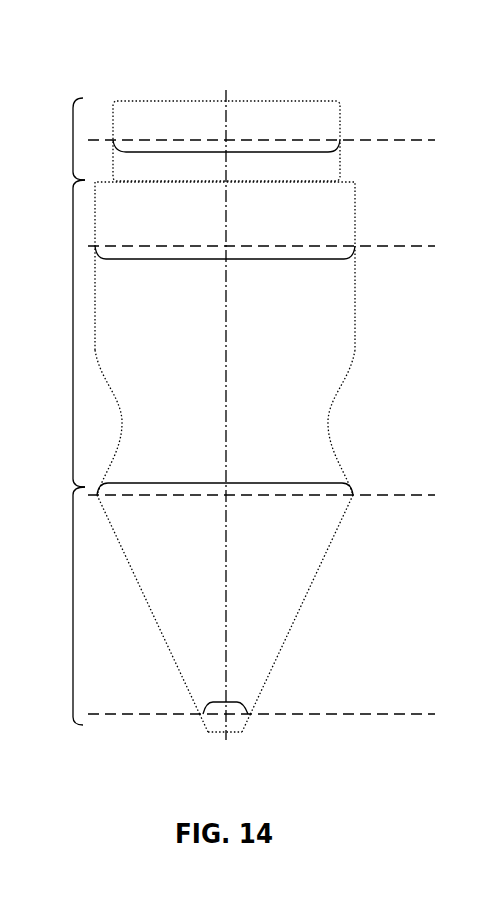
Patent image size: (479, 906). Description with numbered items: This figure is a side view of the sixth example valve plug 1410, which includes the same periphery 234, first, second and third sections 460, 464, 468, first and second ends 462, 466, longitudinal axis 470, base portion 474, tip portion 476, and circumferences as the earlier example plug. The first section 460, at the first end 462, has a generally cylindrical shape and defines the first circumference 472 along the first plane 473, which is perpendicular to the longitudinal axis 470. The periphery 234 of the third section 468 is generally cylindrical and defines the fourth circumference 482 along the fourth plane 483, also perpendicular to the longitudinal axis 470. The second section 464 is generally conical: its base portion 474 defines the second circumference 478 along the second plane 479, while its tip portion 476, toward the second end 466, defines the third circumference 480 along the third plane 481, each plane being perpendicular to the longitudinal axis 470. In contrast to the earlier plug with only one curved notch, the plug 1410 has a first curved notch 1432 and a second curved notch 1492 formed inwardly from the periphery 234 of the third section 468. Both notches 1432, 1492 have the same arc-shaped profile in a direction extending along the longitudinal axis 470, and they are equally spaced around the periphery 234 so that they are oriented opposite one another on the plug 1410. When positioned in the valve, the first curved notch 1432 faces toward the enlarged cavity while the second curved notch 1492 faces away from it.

The sixth example valve plug 1410 is at (352, 67).
The first end 462 is at (257, 102).
The first plane 473 is at (370, 140).
The first circumference 472 is at (273, 152).
The first section 460 is at (73, 141).
The third section 468 is at (73, 255).
The fourth plane 483 is at (370, 246).
The fourth circumference 482 is at (282, 259).
The periphery 234 is at (355, 305).
The second curved notch 1492 is at (122, 421).
The first curved notch 1432 is at (338, 450).
The second circumference 478 is at (145, 483).
The second plane 479 is at (377, 495).
The base portion 474 is at (347, 513).
The longitudinal axis 470 is at (226, 635).
The second section 464 is at (73, 605).
The third circumference 480 is at (240, 702).
The third plane 481 is at (352, 714).
The second end 466 is at (217, 732).
The tip portion 476 is at (242, 723).